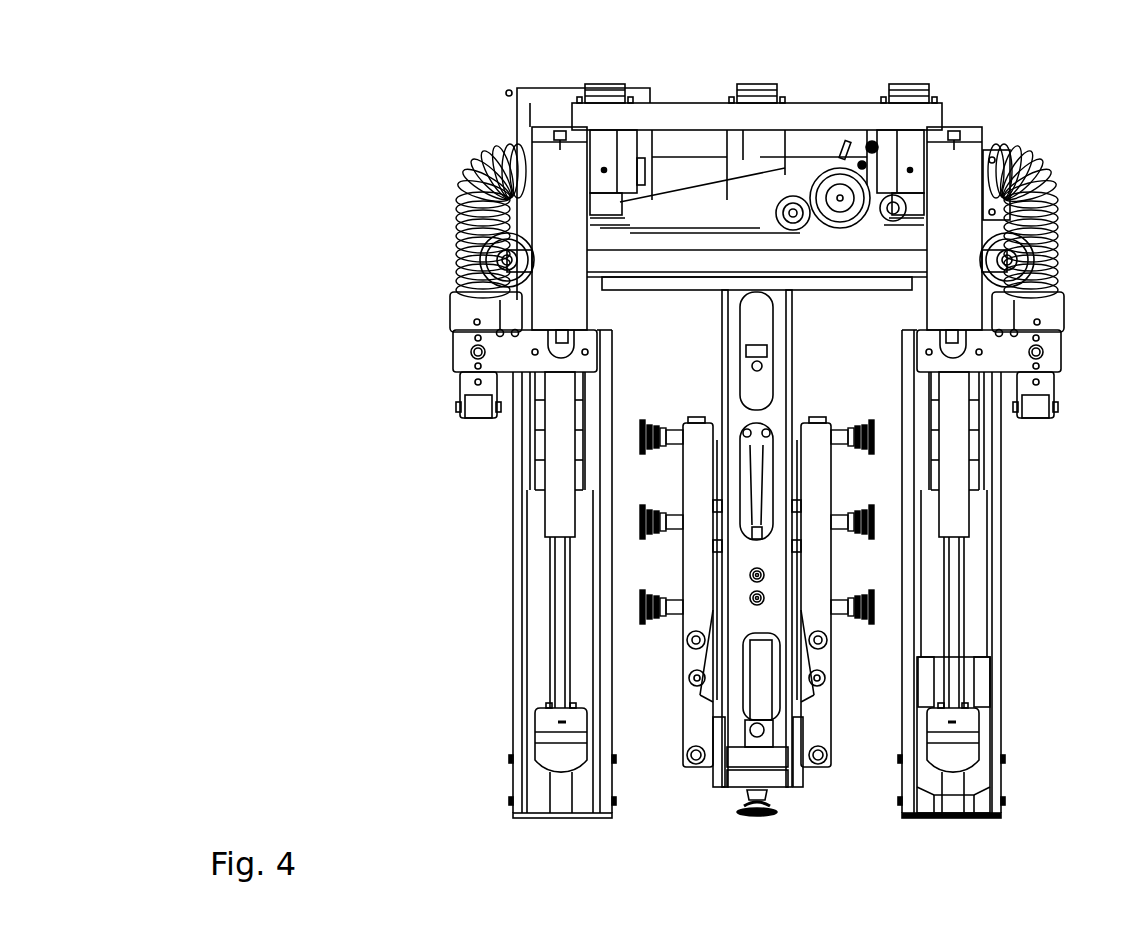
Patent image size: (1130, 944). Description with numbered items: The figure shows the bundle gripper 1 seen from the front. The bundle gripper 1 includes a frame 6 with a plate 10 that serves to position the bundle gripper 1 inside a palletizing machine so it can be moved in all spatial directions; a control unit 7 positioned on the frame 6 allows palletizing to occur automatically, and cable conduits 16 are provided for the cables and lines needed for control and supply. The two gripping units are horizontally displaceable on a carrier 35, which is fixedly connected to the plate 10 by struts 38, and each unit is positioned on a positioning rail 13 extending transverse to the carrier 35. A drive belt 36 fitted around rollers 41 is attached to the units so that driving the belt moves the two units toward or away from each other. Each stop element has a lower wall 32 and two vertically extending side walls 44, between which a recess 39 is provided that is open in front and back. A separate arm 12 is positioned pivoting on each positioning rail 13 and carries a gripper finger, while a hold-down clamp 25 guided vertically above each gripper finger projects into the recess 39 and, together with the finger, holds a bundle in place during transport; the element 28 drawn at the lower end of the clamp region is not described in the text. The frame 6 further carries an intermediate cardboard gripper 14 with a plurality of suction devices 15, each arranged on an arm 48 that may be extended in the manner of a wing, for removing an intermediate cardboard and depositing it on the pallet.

The bundle gripper 1 is at (360, 137).
The frame 6 is at (825, 102).
The control unit 7 is at (549, 84).
The plate 10 is at (686, 112).
The arm 12 is at (968, 557).
The positioning rail 13 is at (988, 583).
The intermediate cardboard gripper 14 is at (683, 763).
The suction device 15 is at (664, 432).
The cable conduits 16 is at (1053, 177).
The hold-down clamp 25 is at (549, 722).
The rounded jaw tip 28 is at (556, 770).
The lower wall 32 is at (558, 818).
The carrier 35 is at (703, 262).
The drive belt 36 is at (756, 226).
The struts 38 is at (627, 143).
The recess 39 is at (538, 692).
The rollers 41 is at (1043, 288).
The side walls 44 is at (518, 577).
The arm 48 is at (697, 493).